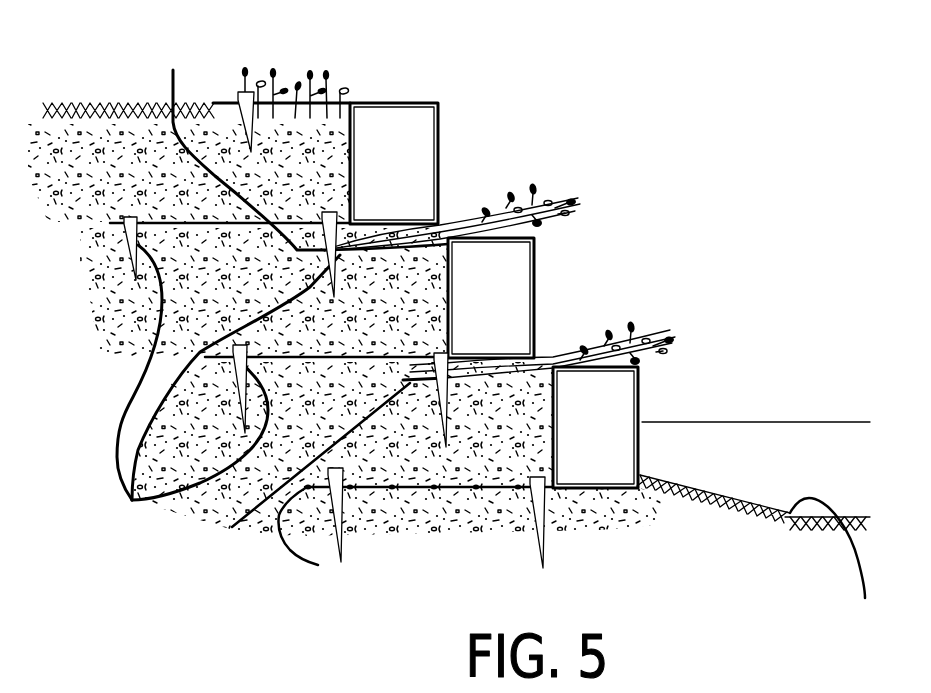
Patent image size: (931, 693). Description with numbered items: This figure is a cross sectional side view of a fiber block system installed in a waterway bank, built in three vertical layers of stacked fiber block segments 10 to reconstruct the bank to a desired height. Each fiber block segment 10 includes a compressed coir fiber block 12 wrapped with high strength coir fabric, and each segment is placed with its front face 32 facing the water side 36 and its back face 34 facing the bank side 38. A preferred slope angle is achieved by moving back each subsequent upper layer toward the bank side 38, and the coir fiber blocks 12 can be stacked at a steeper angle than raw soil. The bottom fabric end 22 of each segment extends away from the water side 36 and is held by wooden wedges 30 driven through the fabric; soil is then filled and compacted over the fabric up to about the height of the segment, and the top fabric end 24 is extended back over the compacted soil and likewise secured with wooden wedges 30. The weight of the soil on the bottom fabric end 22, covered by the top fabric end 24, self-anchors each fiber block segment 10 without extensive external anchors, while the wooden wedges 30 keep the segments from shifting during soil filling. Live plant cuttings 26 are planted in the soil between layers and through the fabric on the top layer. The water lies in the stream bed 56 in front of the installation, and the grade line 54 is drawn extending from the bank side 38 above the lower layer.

The fiber block segment 10 is at (460, 112).
The compressed coir fiber block 12 is at (410, 163).
The bottom fabric end 22 is at (314, 544).
The top fabric end 24 is at (213, 103).
The live plant cuttings 26 is at (352, 80).
The wooden wedges 30 is at (220, 390).
The front face 32 is at (662, 459).
The back face 34 is at (417, 327).
The water side 36 is at (671, 517).
The bank side 38 is at (496, 500).
The original grade line 54 is at (823, 419).
The stream bed 56 is at (834, 563).